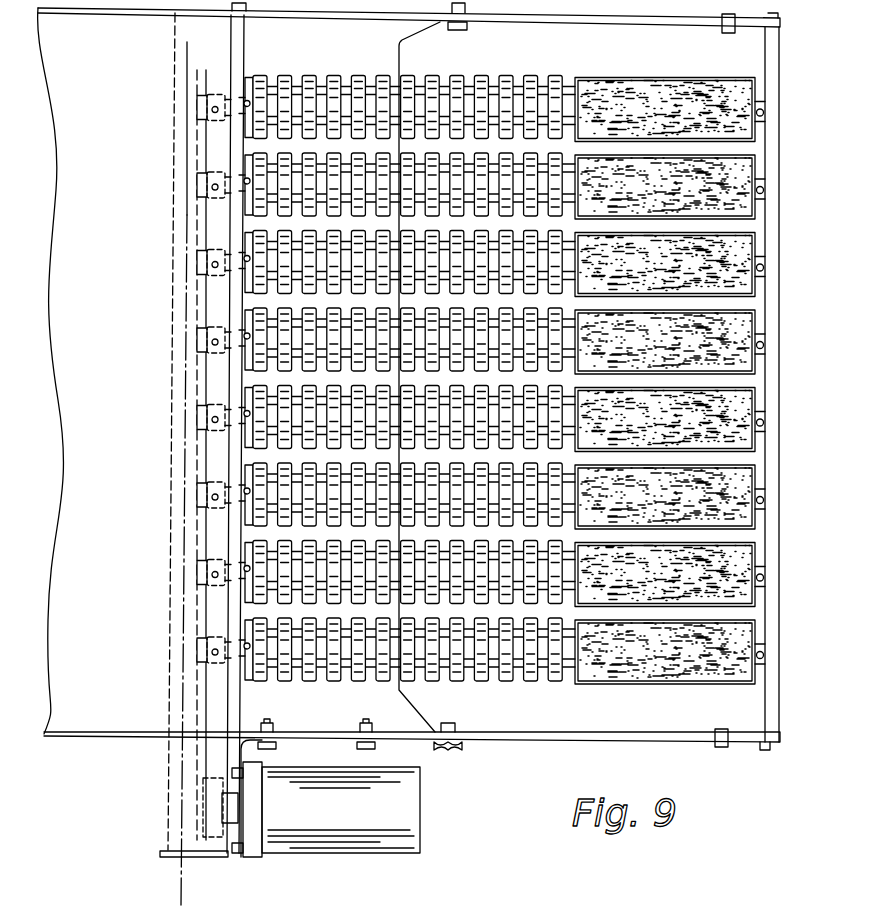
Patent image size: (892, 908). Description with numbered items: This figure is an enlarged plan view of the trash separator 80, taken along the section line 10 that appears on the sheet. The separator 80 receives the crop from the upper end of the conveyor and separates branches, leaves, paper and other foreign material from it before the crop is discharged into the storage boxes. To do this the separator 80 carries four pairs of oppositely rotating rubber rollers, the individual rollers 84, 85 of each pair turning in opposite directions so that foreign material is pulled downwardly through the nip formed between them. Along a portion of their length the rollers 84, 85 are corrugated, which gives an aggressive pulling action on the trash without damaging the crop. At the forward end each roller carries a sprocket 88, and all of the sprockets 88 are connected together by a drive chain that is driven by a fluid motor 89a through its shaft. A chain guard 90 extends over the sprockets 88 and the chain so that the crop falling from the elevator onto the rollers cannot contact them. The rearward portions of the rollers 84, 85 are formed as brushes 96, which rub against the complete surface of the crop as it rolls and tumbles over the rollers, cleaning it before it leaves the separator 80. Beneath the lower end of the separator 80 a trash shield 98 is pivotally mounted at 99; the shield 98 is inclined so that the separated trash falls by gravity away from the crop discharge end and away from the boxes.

The section line 10- 10 is at (187, 53).
The trash separator 80 is at (703, 745).
The roller 84 is at (752, 175).
The roller 85 is at (752, 98).
The sprocket 88 is at (204, 93).
The fluid motor 89a is at (356, 842).
The chain guard 90 is at (165, 762).
The brushes 96 is at (638, 78).
The trash shield 98 is at (424, 745).
The pivot mounting 99 is at (736, 17).